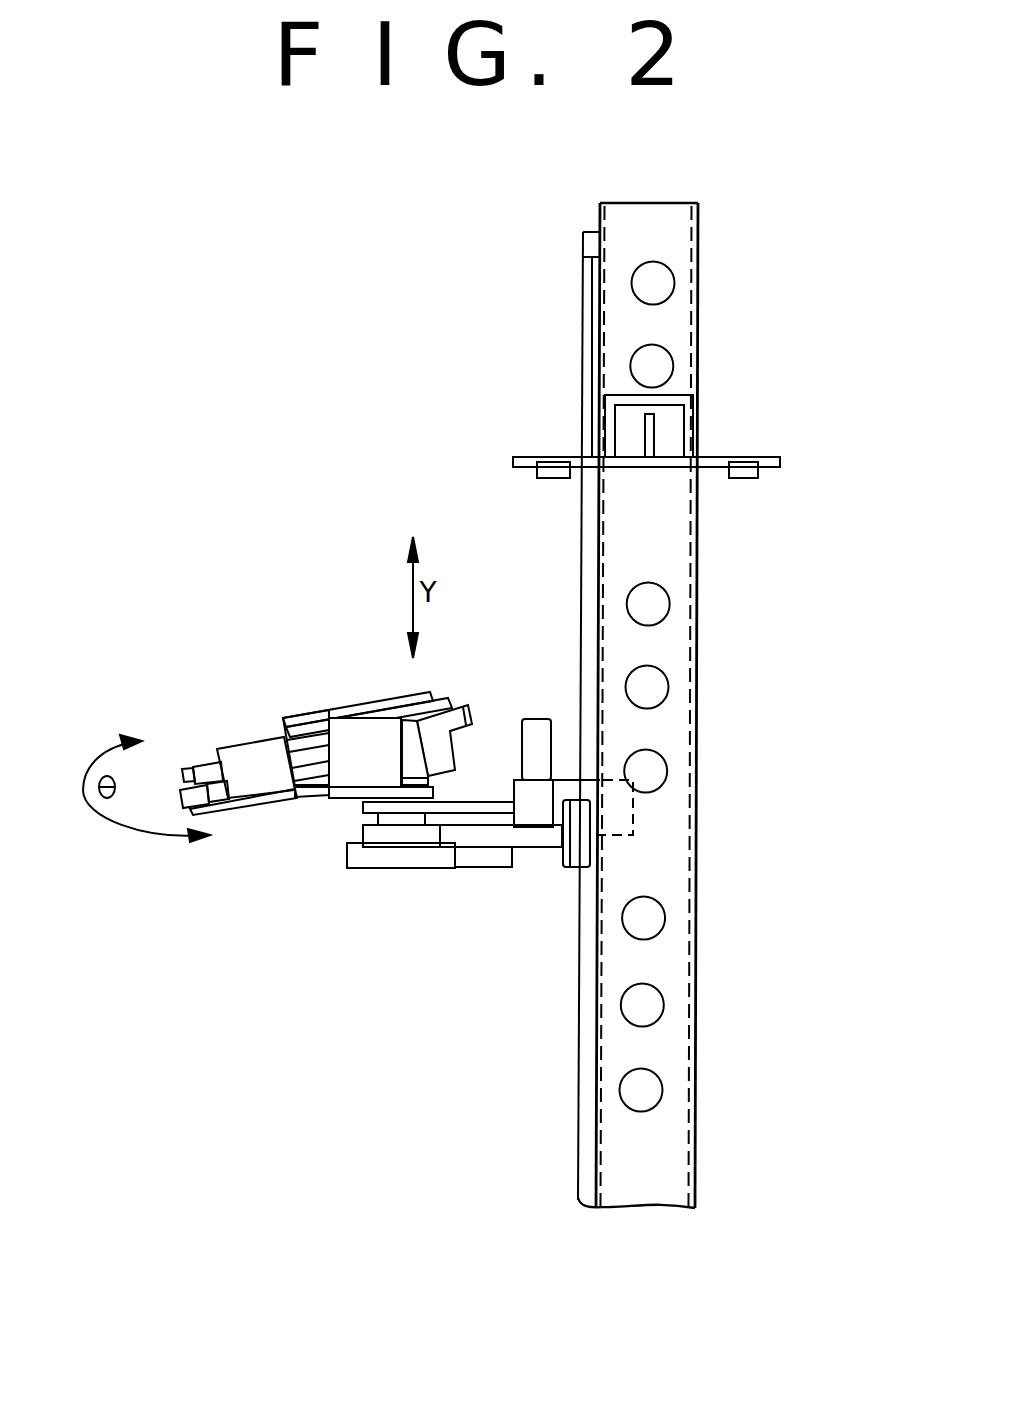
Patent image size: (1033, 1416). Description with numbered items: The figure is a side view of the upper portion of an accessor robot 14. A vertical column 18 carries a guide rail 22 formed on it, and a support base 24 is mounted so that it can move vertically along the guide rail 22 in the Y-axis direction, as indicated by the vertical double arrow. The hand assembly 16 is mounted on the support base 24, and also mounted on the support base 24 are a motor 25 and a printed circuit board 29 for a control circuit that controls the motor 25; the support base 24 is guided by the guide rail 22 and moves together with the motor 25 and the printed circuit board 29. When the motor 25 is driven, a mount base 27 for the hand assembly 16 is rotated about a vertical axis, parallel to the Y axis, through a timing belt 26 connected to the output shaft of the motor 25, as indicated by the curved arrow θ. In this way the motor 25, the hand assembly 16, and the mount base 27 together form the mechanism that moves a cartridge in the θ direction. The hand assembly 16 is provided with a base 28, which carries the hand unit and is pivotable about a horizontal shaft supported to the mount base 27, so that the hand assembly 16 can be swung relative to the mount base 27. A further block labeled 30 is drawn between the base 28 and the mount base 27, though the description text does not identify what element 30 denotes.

The accessor robot 14 is at (750, 355).
The hand assembly 16 is at (367, 700).
The vertical column 18 is at (680, 646).
The guide rail 22 is at (578, 1028).
The support base 24 is at (478, 840).
The motor 25 is at (537, 722).
The timing belt 26 is at (478, 802).
The mount base 27 is at (331, 810).
The base 28 is at (237, 800).
The printed circuit board 29 is at (640, 825).
The rotary block 30 is at (347, 735).